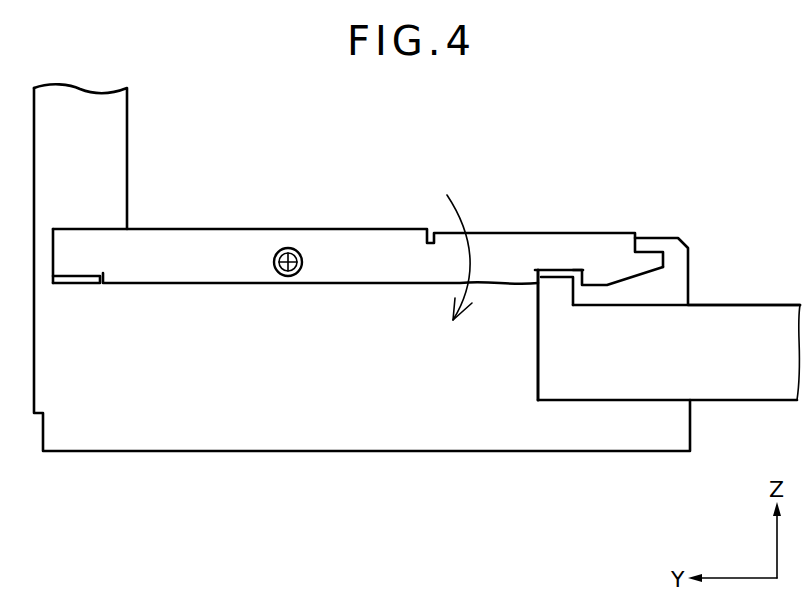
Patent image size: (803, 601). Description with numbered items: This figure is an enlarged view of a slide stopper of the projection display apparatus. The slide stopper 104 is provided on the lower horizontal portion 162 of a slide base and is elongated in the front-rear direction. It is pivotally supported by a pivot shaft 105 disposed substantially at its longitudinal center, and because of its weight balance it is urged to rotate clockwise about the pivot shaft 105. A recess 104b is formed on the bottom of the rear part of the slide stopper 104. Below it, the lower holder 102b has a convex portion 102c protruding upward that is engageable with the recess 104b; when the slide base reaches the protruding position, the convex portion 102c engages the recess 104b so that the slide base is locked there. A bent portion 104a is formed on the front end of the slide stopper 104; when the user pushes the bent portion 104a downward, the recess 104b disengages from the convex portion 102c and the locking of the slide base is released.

The lower horizontal portion 162 is at (365, 412).
The lower holder 102b is at (648, 382).
The convex portion 102c is at (553, 278).
The slide stopper 104 is at (523, 247).
The bent portion 104a is at (80, 275).
The recess 104b is at (592, 247).
The pivot shaft 105 is at (289, 248).